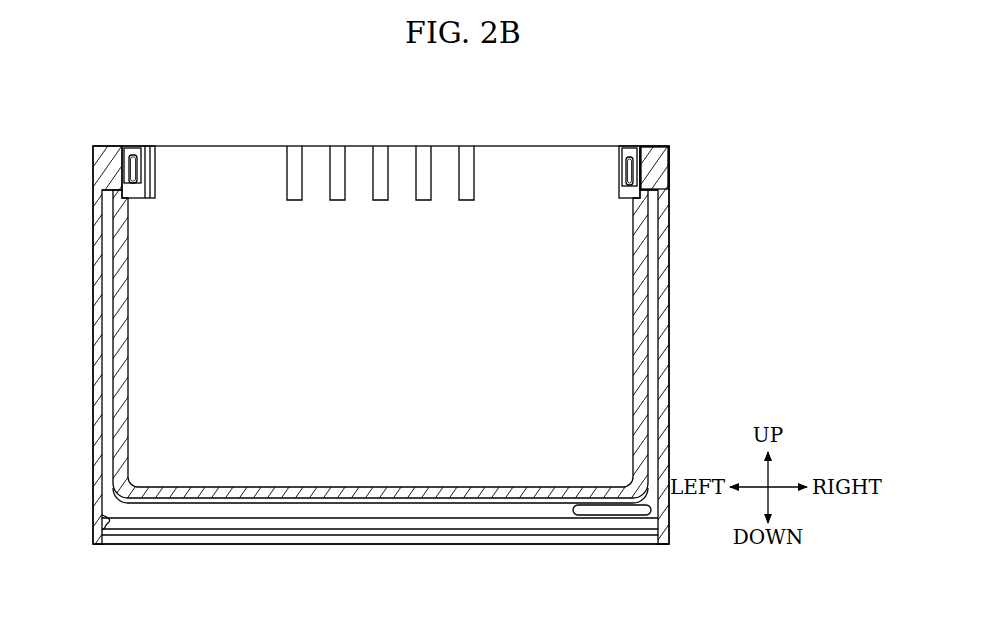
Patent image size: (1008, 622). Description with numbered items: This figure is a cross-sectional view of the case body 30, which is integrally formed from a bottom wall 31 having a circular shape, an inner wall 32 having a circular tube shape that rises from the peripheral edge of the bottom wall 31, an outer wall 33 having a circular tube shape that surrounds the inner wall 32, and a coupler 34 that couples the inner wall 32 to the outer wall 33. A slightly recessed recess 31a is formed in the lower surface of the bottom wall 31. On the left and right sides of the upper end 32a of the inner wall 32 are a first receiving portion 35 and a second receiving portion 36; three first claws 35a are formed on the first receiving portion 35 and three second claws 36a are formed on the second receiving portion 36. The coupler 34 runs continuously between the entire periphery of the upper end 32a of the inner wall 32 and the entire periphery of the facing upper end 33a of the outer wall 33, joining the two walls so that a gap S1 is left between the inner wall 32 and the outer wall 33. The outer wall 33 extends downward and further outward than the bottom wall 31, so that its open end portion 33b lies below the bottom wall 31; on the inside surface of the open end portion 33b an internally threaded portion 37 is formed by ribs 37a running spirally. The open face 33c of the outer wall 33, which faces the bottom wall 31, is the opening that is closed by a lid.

The case body 30 is at (672, 220).
The bottom wall 31 is at (343, 500).
The recess 31a is at (290, 500).
The inner wall 32 is at (640, 318).
The upper end of inner wall 32a is at (640, 180).
The outer wall 33 is at (663, 355).
The upper end of outer wall 33a is at (670, 160).
The open end portion 33b is at (672, 530).
The open face 33c is at (575, 540).
The coupler 34 is at (648, 185).
The first receiving portion 35 is at (171, 143).
The first claw 35a is at (133, 160).
The second receiving portion 36 is at (588, 144).
The second claw 36a is at (630, 180).
The internally threaded portion 37 is at (185, 535).
The rib 37a is at (135, 537).
The gap S1 is at (653, 388).